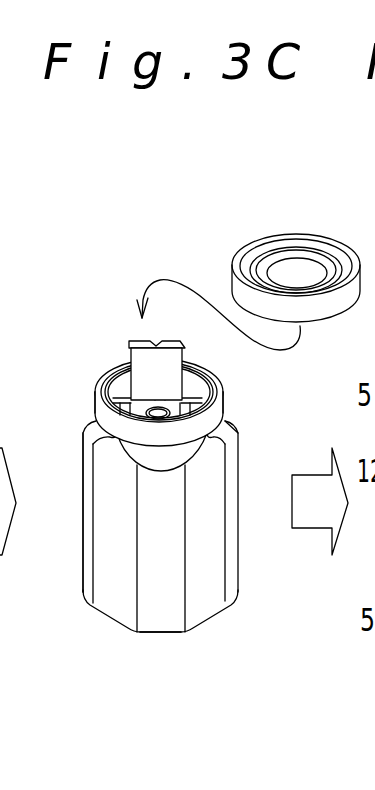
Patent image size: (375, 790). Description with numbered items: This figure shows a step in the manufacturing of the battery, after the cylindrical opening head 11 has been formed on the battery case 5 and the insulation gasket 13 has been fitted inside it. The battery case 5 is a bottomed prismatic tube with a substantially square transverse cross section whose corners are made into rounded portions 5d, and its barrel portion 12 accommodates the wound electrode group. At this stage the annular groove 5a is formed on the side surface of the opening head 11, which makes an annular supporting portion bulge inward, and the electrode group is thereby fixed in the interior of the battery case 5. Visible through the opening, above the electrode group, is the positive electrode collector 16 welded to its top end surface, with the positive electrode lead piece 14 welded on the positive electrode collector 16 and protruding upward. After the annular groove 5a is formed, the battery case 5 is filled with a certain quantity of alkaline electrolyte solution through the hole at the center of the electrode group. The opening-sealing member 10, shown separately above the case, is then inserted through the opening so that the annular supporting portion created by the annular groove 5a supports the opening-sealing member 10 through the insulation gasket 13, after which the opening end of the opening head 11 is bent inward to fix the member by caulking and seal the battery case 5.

The battery case 5 is at (244, 581).
The annular groove 5a is at (236, 424).
The rounded portions 5d is at (161, 612).
The opening-sealing member 10 is at (303, 268).
The opening head 11 is at (97, 398).
The barrel portion 12 is at (83, 527).
The insulation gasket 13 is at (120, 380).
The positive electrode lead piece 14 is at (147, 368).
The positive electrode collector 16 is at (218, 387).